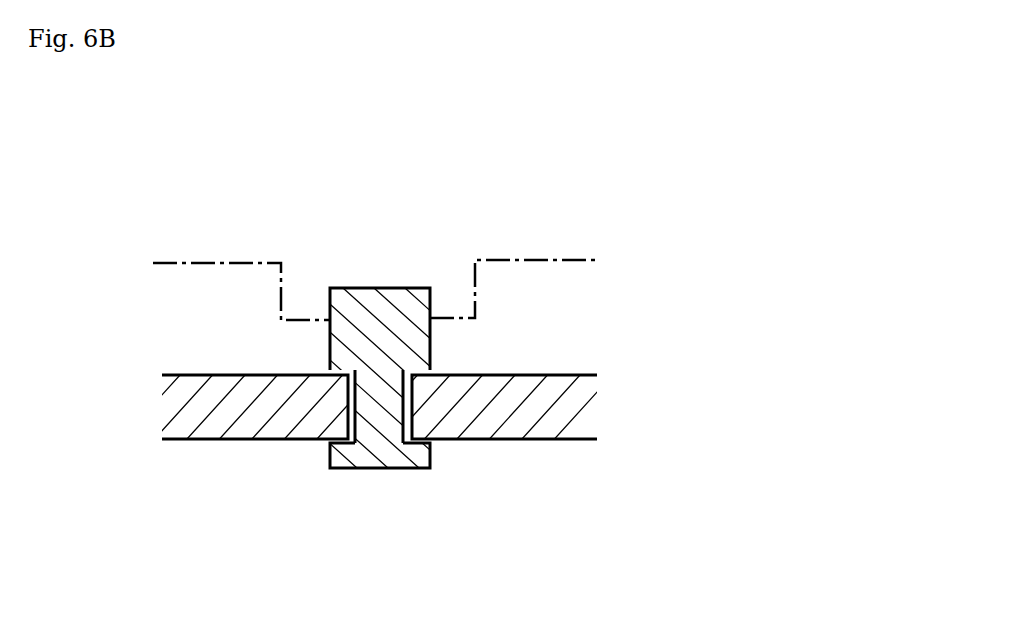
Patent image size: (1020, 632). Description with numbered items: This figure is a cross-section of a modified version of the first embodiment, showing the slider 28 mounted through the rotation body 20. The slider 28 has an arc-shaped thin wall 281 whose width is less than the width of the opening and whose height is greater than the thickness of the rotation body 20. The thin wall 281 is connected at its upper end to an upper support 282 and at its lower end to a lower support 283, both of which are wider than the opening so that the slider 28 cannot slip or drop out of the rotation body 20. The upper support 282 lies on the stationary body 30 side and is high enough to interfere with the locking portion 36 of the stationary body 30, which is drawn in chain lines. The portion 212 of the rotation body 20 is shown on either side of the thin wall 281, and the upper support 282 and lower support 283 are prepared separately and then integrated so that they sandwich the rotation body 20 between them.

The slider 28 is at (396, 344).
The upper support 282 is at (353, 303).
The thin wall 281 is at (373, 407).
The lower support 283 is at (343, 460).
The locking portion 36 is at (298, 293).
The stationary body 30 is at (562, 248).
The through hole portion 212 is at (542, 373).
The rotation body 20 is at (488, 409).